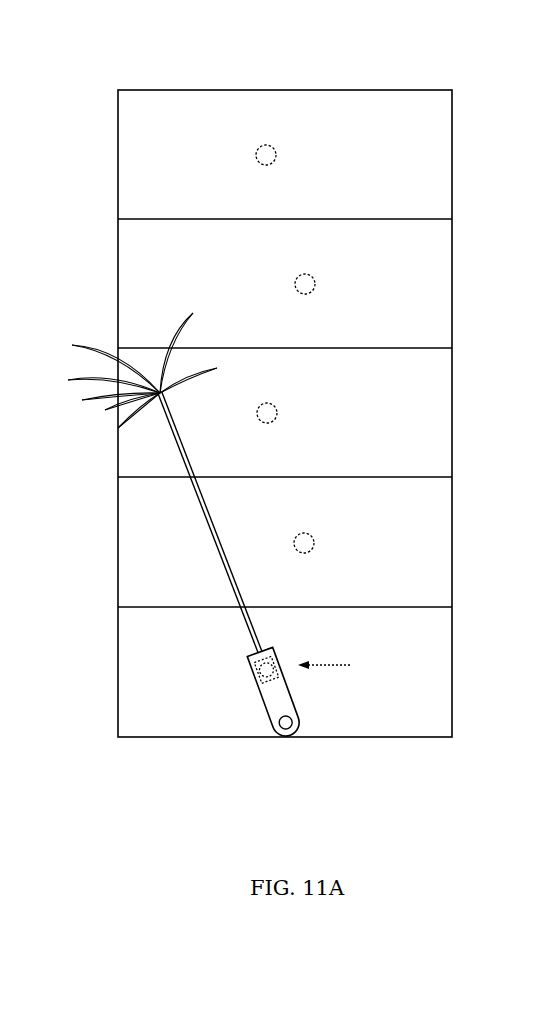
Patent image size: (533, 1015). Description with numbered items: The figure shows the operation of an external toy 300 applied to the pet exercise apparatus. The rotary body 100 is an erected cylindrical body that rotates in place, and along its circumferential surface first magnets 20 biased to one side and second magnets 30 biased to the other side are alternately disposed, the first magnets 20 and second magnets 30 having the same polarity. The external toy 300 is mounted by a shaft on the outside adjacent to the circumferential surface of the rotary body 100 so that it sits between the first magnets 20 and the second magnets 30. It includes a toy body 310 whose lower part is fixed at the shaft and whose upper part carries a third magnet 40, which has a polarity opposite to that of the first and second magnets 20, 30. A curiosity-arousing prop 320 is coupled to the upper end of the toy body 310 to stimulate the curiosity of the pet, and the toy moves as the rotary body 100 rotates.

The rotary body 100 is at (187, 108).
The first magnets 20 is at (266, 145).
The second magnets 30 is at (305, 273).
The external toy 300 is at (184, 599).
The toy body 310 is at (263, 700).
The curiosity-arousing prop 320 is at (217, 542).
The third magnet 40 is at (287, 687).